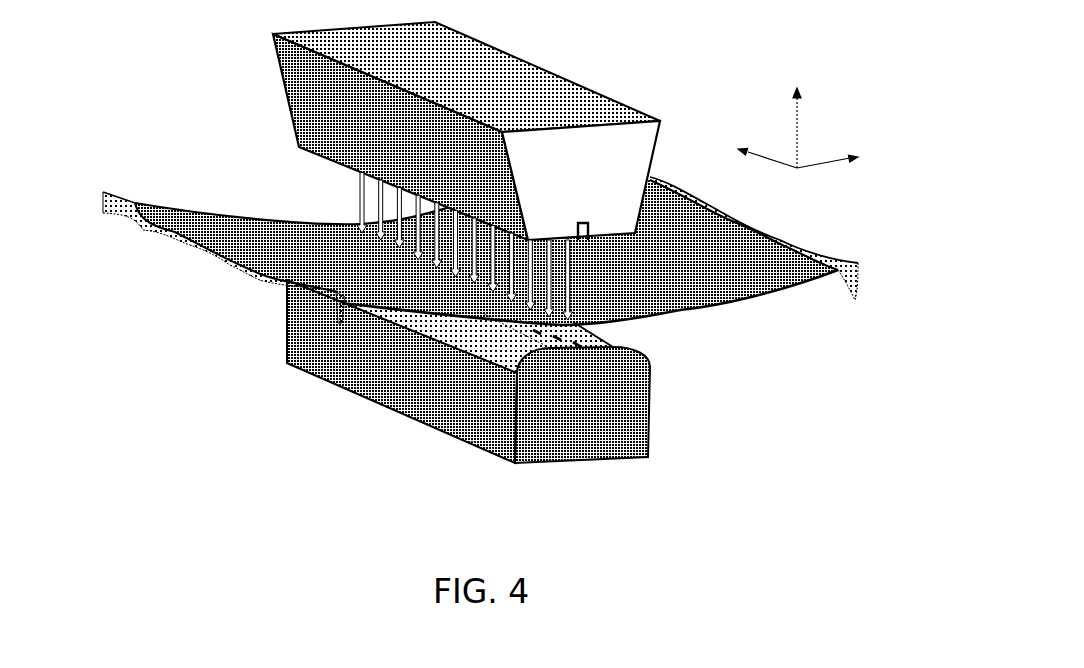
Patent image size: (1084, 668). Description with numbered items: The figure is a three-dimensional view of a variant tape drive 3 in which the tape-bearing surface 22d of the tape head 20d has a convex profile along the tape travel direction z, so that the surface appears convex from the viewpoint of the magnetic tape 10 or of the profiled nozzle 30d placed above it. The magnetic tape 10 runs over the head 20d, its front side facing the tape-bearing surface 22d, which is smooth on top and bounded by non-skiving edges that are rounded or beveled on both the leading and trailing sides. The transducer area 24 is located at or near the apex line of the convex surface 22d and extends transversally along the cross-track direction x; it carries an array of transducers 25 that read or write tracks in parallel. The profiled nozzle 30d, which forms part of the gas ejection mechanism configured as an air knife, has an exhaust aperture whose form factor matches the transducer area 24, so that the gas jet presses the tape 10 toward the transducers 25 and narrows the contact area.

The tape drive 3 is at (496, 276).
The magnetic tape 10 is at (282, 230).
The tape head 20d is at (652, 410).
The tape-bearing surface 22d is at (440, 323).
The transducer area 24 is at (493, 350).
The transducers 25 is at (587, 345).
The profiled nozzle 30d is at (630, 105).